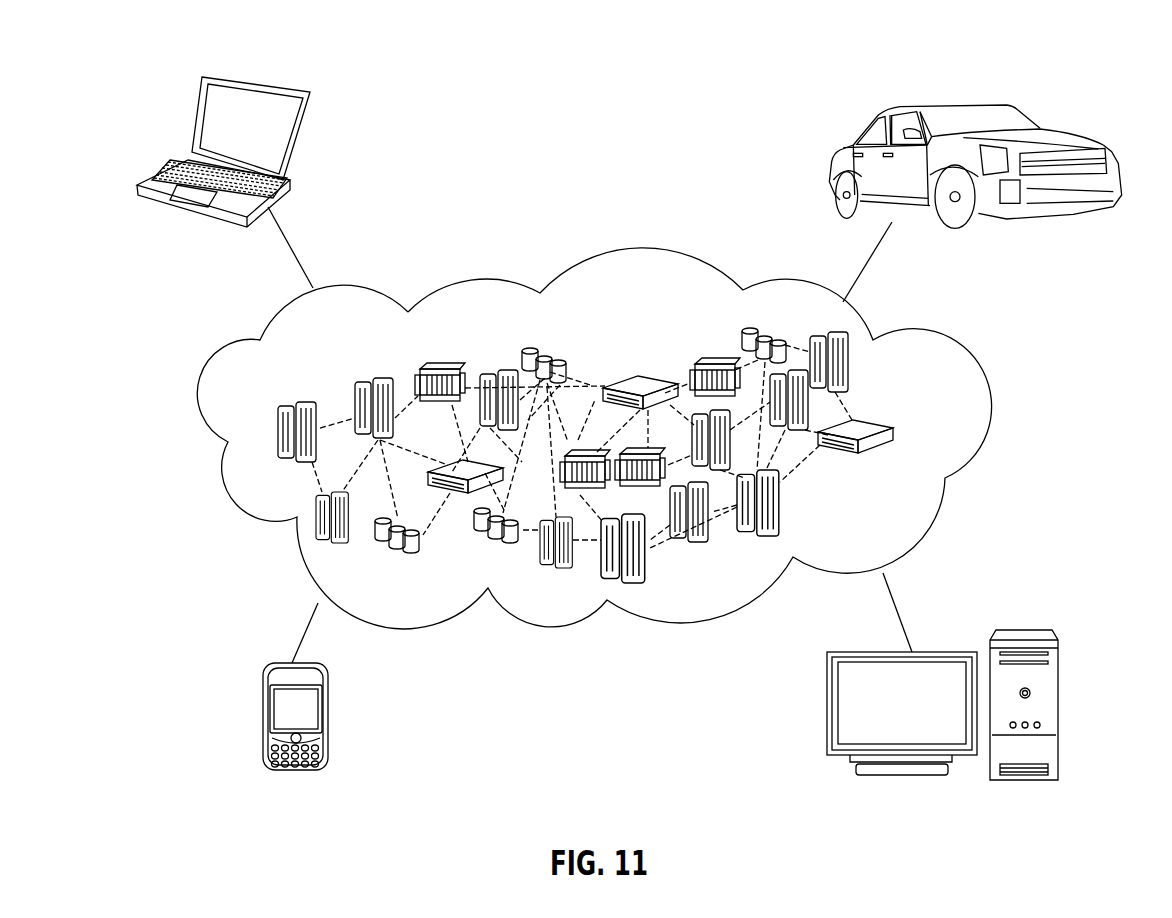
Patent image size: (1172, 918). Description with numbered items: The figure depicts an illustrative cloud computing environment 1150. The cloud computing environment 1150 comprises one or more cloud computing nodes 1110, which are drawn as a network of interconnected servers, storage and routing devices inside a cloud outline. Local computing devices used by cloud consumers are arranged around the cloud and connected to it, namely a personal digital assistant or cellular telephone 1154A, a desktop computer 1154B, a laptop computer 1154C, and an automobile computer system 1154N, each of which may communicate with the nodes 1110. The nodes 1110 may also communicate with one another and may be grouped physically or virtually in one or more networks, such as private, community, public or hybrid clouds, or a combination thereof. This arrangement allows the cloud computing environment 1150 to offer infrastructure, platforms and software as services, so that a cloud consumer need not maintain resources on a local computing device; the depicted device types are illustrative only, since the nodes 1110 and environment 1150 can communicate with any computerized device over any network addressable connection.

The cloud computing environment 1150 is at (579, 36).
The cloud computing nodes 1110 is at (940, 438).
The personal digital assistant or cellular telephone 1154A is at (263, 719).
The desktop computer 1154B is at (1028, 630).
The laptop computer 1154C is at (300, 142).
The automobile computer system 1154N is at (835, 152).